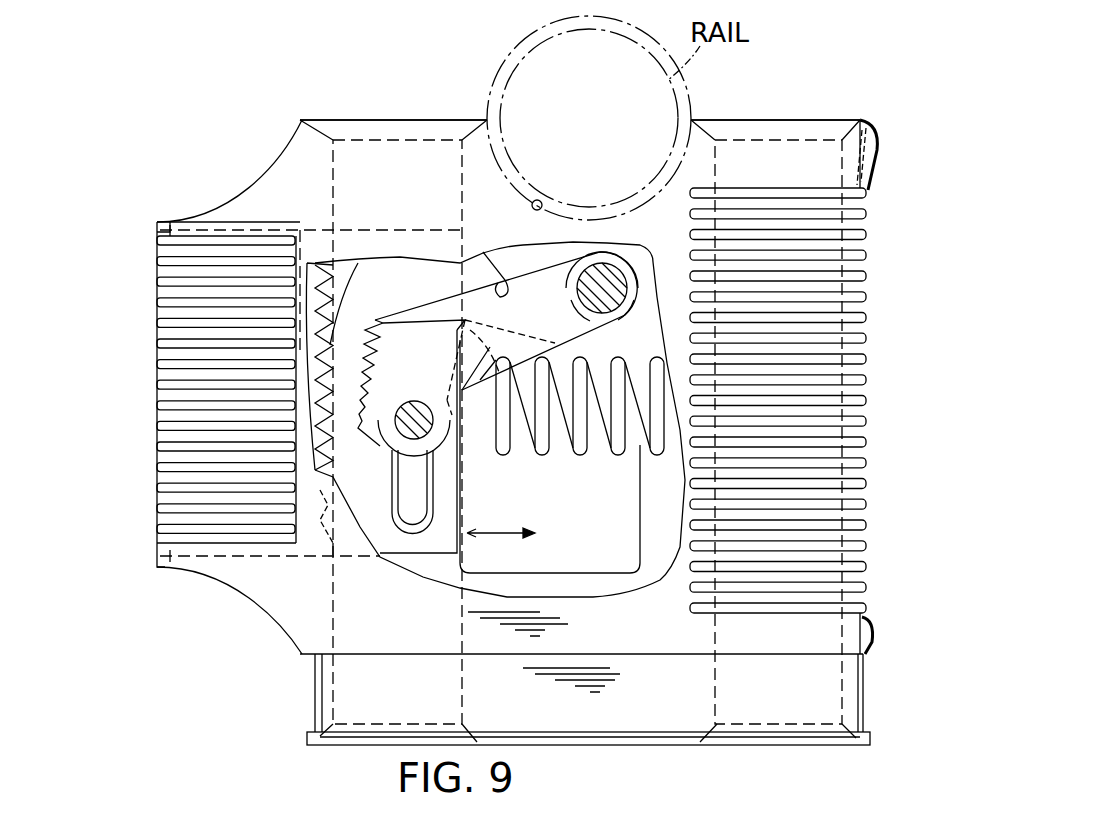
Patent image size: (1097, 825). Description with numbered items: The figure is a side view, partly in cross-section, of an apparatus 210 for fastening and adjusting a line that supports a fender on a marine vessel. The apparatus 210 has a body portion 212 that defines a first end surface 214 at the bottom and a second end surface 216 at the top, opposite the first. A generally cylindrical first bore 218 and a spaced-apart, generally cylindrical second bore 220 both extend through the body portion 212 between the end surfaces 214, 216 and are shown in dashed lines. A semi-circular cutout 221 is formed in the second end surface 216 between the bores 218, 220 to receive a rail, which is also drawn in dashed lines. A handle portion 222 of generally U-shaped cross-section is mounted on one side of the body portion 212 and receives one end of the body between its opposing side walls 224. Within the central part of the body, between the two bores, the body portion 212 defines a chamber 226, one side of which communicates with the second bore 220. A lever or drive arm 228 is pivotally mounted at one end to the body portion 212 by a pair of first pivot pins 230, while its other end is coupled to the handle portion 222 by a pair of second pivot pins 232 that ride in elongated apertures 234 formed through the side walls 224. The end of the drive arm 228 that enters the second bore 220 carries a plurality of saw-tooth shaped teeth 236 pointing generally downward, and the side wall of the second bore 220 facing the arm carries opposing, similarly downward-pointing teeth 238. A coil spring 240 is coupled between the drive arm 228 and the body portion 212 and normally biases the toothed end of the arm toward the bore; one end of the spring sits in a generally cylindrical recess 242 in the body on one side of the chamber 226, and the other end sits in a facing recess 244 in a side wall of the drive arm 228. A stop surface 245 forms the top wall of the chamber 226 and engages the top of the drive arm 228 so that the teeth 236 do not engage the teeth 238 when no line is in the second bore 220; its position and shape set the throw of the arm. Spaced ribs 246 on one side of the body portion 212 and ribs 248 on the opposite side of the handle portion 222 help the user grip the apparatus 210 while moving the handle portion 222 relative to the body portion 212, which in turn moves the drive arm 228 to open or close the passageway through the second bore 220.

The apparatus 210 is at (786, 62).
The body portion 212 is at (878, 153).
The first end surface 214 is at (622, 746).
The second end surface 216 is at (742, 120).
The first bore 218 is at (718, 182).
The second bore 220 is at (460, 180).
The semi-circular cutout 221 is at (532, 205).
The handle portion 222 is at (156, 293).
The side walls 224 is at (266, 200).
The chamber 226 is at (605, 540).
The drive arm 228 is at (470, 290).
The first pivot pins 230 is at (622, 262).
The second pivot pins 232 is at (418, 404).
The elongated apertures 234 is at (428, 492).
The teeth 236 is at (402, 336).
The teeth 238 is at (350, 391).
The coil spring 240 is at (548, 448).
The cylindrical recess 242 is at (642, 485).
The cylindrical recess 244 is at (455, 418).
The stop surface 245 is at (489, 261).
The ribs 246 is at (866, 362).
The ribs 248 is at (157, 380).